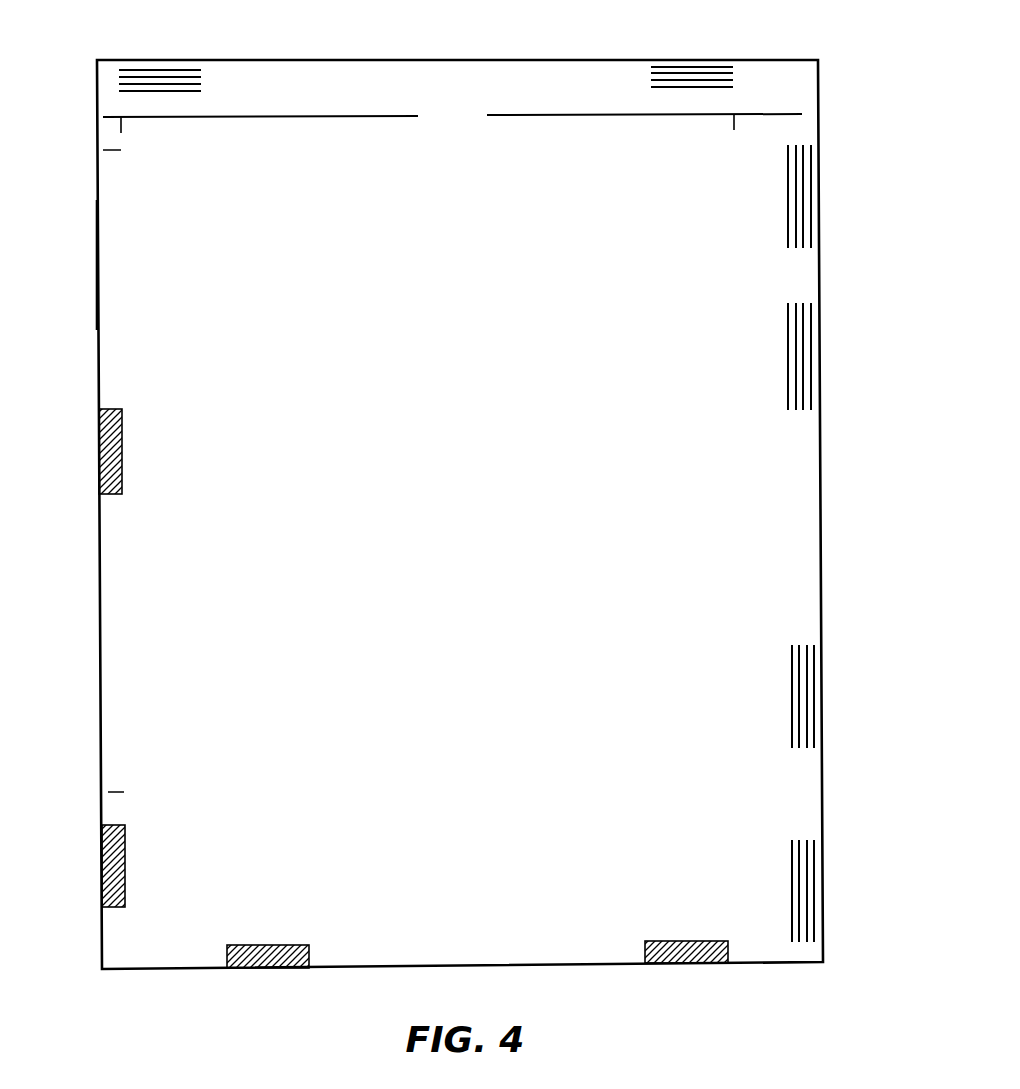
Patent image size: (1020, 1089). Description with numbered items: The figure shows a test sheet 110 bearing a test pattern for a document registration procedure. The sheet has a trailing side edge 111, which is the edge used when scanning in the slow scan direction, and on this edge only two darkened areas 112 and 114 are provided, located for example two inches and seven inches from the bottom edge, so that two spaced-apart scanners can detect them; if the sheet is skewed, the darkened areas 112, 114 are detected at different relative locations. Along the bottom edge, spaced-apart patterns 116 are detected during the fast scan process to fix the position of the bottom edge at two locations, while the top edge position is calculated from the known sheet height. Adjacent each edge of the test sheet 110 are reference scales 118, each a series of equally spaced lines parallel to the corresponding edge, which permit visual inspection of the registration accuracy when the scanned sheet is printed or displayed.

The test sheet 110 is at (346, 29).
The trailing side edge 111 is at (98, 244).
The darkened area 112 is at (122, 450).
The darkened area 114 is at (125, 865).
The patterns 116 is at (268, 945).
The reference scales 118 is at (162, 77).